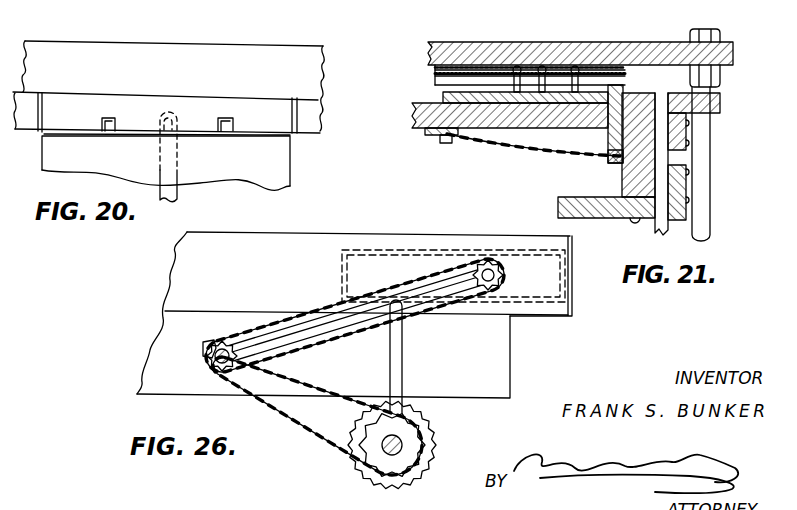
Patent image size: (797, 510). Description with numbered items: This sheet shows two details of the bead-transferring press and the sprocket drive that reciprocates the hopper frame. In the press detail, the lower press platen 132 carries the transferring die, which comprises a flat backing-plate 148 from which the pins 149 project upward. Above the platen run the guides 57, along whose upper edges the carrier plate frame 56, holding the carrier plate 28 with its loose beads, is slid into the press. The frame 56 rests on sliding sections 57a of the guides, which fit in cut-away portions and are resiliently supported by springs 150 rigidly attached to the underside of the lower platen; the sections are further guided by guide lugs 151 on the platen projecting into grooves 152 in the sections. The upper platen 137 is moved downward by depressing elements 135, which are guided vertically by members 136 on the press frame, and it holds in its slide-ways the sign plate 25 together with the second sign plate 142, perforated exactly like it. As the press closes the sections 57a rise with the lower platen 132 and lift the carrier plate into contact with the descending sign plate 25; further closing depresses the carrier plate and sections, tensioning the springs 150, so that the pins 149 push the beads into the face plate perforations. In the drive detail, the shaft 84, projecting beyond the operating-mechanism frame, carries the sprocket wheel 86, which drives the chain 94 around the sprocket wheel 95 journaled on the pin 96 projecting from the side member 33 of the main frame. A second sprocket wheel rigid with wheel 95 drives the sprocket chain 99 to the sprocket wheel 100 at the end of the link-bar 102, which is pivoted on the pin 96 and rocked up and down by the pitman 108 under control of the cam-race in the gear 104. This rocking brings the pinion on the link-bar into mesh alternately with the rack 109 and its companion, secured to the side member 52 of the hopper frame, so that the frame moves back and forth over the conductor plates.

In FIG. 21, the sign plate 25 is at (433, 67).
In FIG. 21, the carrier plate 28 is at (435, 75).
In FIG. 20, the side member 33 is at (325, 53).
In FIG. 21, the side member 33 is at (630, 178).
In FIG. 26, the side member 33 is at (511, 345).
In FIG. 26, the side member of the hopper frame 52 is at (183, 265).
In FIG. 21, the carrier plate frame 56 is at (625, 82).
In FIG. 20, the guides 57 is at (30, 92).
In FIG. 20, the sliding sections 57a is at (207, 103).
In FIG. 21, the sliding sections 57a is at (645, 125).
In FIG. 26, the shaft 84 is at (428, 446).
In FIG. 26, the sprocket wheel 86 is at (425, 424).
In FIG. 26, the chain 94 is at (288, 413).
In FIG. 26, the sprocket wheel 95 is at (207, 355).
In FIG. 26, the pin 96 is at (210, 364).
In FIG. 26, the sprocket chain 99 is at (274, 324).
In FIG. 26, the sprocket wheel 100 is at (490, 290).
In FIG. 26, the link-bar 102 is at (318, 333).
In FIG. 26, the gear 104 is at (352, 458).
In FIG. 26, the pitman 108 is at (402, 363).
In FIG. 26, the rack 109 is at (418, 250).
In FIG. 20, the lower press platen 132 is at (285, 163).
In FIG. 21, the lower press platen 132 is at (425, 128).
In FIG. 21, the depressing elements 135 is at (712, 157).
In FIG. 21, the guide members 136 is at (718, 100).
In FIG. 21, the upper platen 137 is at (614, 52).
In FIG. 21, the second sign plate 142 is at (488, 65).
In FIG. 21, the backing-plate 148 is at (505, 98).
In FIG. 21, the pins 149 is at (548, 112).
In FIG. 20, the springs 150 is at (180, 193).
In FIG. 21, the springs 150 is at (545, 153).
In FIG. 20, the guide lugs 151 is at (107, 133).
In FIG. 20, the grooves 152 is at (102, 117).